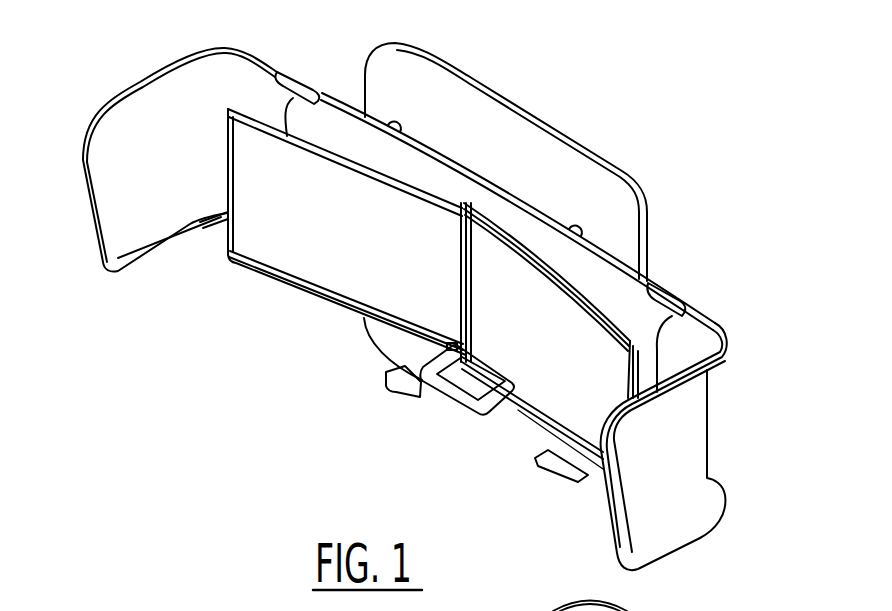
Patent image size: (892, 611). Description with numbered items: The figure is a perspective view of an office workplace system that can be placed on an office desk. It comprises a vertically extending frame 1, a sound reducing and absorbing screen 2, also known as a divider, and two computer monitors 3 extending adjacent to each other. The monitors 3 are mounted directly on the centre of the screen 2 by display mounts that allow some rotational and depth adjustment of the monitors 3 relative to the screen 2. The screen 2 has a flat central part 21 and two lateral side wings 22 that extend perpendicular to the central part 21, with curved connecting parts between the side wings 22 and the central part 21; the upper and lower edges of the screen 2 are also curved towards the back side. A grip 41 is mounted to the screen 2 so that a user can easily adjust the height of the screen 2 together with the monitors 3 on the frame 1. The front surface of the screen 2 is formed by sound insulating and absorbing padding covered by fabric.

The frame 1 is at (487, 120).
The sound reducing and absorbing screen 2 is at (620, 290).
The central part 21 is at (318, 116).
The side wings 22 is at (167, 95).
The computer monitors 3 is at (288, 247).
The grip 41 is at (446, 398).